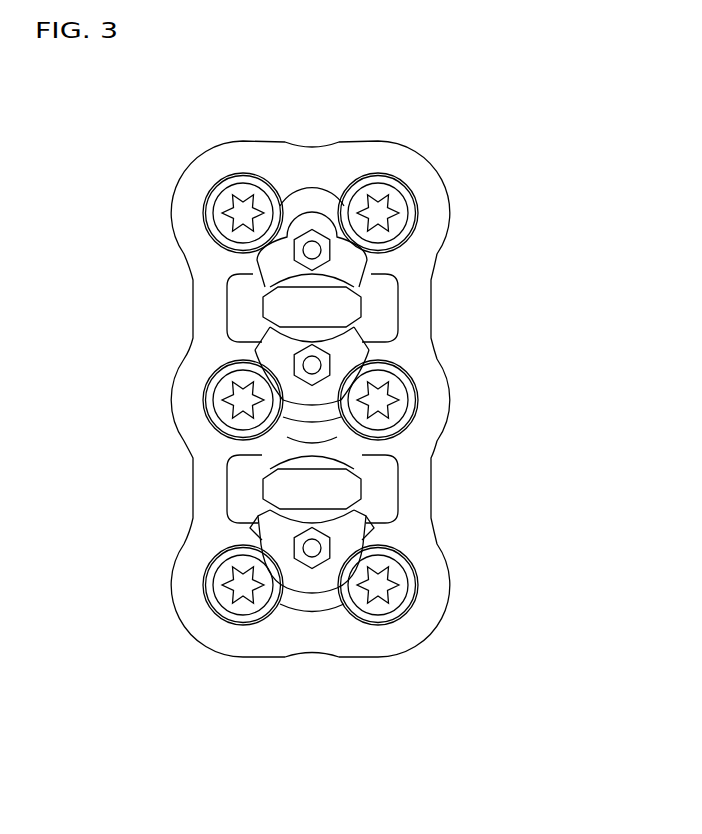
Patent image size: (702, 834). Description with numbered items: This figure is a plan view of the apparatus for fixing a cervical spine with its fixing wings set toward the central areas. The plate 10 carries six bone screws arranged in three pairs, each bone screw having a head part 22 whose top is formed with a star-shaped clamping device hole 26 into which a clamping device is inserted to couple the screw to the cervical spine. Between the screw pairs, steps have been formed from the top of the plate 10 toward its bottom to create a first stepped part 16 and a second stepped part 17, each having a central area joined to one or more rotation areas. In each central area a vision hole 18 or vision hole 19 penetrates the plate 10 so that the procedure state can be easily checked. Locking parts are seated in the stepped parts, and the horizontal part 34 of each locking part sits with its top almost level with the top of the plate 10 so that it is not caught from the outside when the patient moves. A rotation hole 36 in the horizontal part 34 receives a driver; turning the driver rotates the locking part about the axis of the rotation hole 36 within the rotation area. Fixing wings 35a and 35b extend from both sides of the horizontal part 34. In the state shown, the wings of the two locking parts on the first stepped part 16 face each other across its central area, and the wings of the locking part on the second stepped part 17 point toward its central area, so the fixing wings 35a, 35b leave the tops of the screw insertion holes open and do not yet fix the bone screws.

The plate 10 is at (379, 668).
The first stepped part 16 is at (247, 308).
The second stepped part 17 is at (247, 490).
The vision hole 18 is at (312, 318).
The vision hole 19 is at (312, 500).
The head part 22 is at (372, 584).
The clamping device hole 26 is at (373, 582).
The horizontal part 34 is at (307, 576).
The fixing wing 35a is at (352, 532).
The fixing wing 35b is at (272, 530).
The rotation hole 36 is at (317, 567).